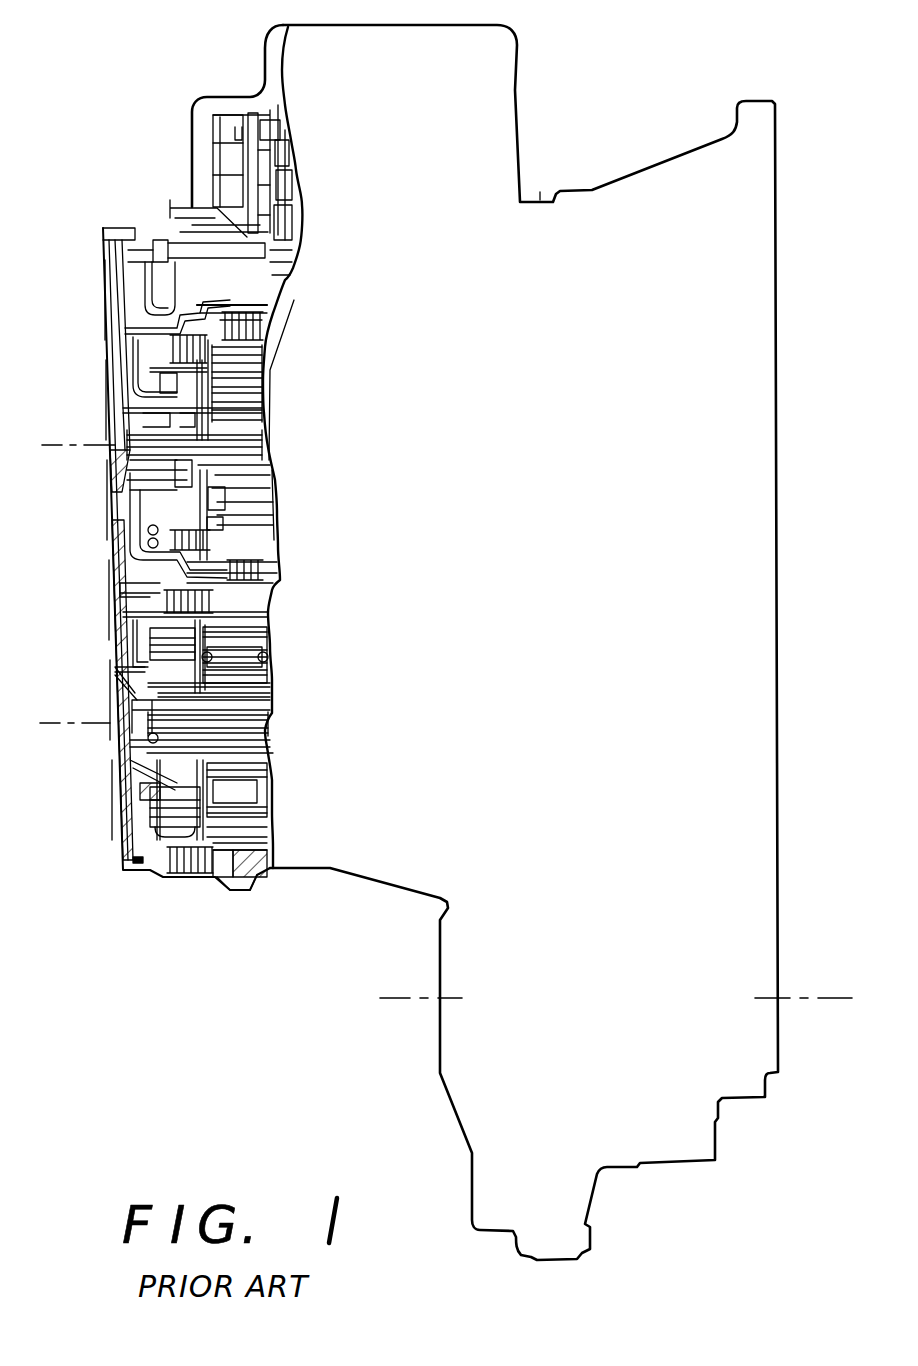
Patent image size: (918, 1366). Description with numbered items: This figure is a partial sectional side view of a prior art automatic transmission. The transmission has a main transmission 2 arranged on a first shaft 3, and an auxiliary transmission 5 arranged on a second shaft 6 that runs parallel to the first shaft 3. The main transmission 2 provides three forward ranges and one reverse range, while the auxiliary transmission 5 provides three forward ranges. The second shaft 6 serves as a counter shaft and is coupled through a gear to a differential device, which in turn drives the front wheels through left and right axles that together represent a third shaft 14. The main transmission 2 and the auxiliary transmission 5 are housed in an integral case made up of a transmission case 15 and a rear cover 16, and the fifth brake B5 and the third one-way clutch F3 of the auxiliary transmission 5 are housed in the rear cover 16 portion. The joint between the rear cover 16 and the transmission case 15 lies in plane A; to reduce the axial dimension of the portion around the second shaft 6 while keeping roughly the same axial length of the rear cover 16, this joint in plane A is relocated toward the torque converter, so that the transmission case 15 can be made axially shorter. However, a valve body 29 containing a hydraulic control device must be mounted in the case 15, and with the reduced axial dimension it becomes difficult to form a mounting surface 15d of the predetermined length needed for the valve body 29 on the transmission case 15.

The valve body 29 is at (232, 117).
The mounting surface 15d is at (240, 228).
The main transmission 2 is at (198, 290).
The first shaft 3 is at (93, 445).
The second shaft 6 is at (96, 723).
The third one-way clutch F3 is at (152, 813).
The rear cover 16 is at (145, 873).
The fifth brake B5 is at (190, 878).
The joint plane A is at (233, 888).
The auxiliary transmission 5 is at (298, 870).
The transmission case 15 is at (391, 890).
The third shaft 14 is at (392, 1003).